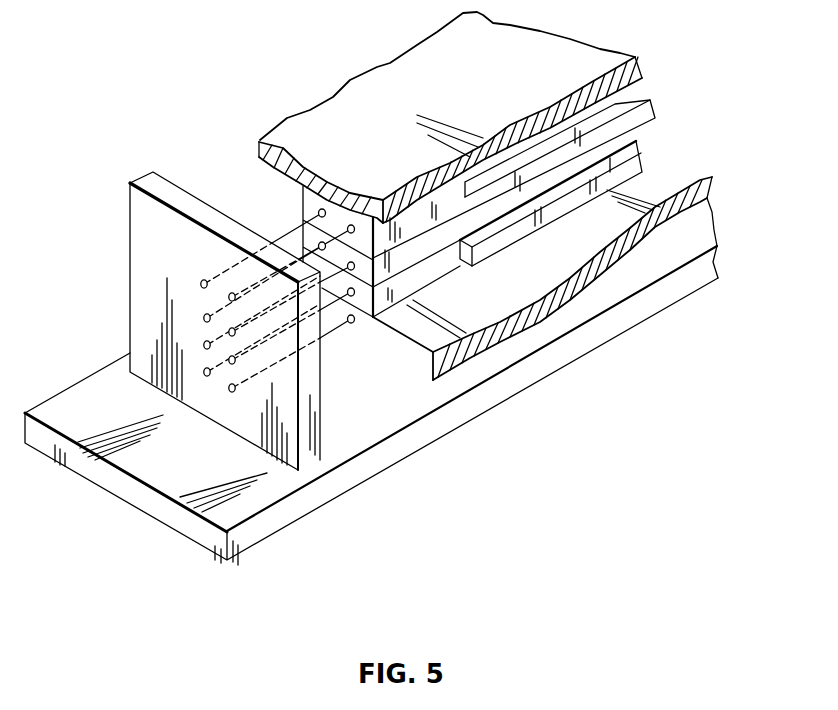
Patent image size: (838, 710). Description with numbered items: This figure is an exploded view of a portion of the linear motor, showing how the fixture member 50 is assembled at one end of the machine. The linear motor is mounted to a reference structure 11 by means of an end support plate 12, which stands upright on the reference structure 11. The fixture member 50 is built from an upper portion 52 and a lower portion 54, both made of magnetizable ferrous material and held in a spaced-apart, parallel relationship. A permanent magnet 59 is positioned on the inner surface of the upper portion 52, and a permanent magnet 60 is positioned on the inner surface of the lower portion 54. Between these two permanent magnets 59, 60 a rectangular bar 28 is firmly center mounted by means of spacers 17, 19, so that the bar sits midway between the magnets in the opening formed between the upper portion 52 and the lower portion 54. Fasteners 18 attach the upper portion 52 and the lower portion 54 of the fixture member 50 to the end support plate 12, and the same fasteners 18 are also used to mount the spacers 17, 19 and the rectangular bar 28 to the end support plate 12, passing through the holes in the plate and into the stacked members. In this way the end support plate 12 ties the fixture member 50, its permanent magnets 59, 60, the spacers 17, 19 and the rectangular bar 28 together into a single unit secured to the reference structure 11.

The fixture member 50 is at (187, 71).
The reference structure 11 is at (101, 381).
The end support plate 12 is at (133, 268).
The fasteners 18 is at (205, 281).
The spacer 17 is at (430, 272).
The spacer 19 is at (453, 257).
The rectangular bar 28 is at (652, 110).
The permanent magnet 59 is at (643, 91).
The permanent magnet 60 is at (640, 158).
The upper portion 52 is at (392, 66).
The lower portion 54 is at (660, 228).